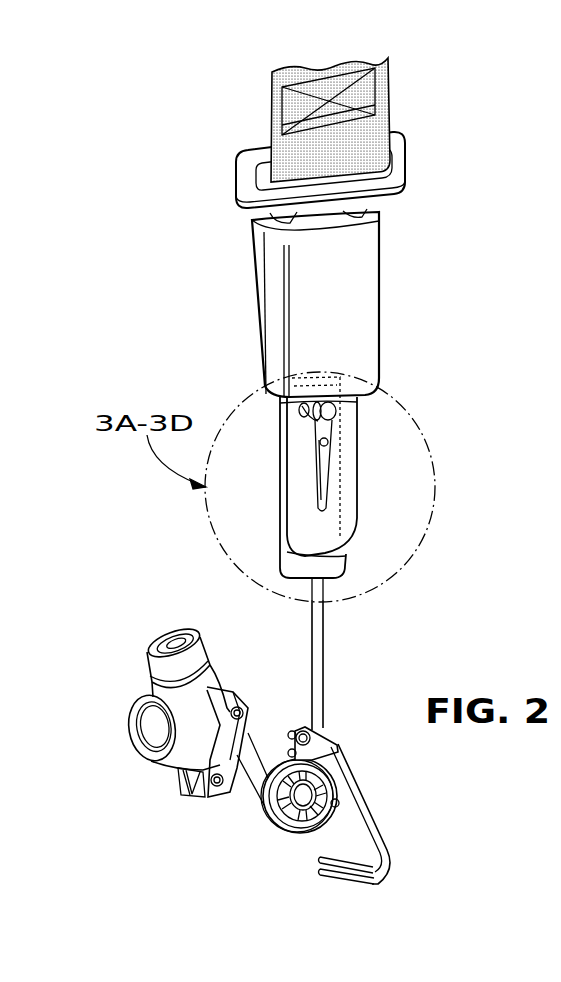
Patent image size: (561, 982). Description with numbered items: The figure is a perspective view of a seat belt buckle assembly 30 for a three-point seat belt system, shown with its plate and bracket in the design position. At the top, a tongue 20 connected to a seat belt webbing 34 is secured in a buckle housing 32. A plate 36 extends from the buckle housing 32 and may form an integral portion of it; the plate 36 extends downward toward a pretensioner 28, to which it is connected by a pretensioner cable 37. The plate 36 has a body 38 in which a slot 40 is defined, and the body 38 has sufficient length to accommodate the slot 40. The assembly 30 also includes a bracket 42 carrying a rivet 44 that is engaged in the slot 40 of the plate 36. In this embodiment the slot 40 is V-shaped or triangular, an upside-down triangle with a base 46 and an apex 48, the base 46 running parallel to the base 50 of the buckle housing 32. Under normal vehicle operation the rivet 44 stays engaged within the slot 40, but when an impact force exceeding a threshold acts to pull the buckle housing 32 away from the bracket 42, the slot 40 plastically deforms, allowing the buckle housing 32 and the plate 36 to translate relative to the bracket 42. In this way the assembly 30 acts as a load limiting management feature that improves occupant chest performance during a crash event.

The tongue 20 is at (410, 158).
The pretensioner 28 is at (287, 836).
The seat belt buckle assembly 30 is at (442, 325).
The buckle housing 32 is at (380, 294).
The seat belt webbing 34 is at (390, 95).
The plate 36 is at (358, 431).
The pretensioner cable 37 is at (327, 661).
The body 38 is at (354, 514).
The slot 40 is at (324, 450).
The bracket 42 is at (346, 581).
The rivet 44 is at (337, 410).
The base 46 is at (312, 416).
The apex 48 is at (318, 503).
The base of the buckle housing 50 is at (296, 408).